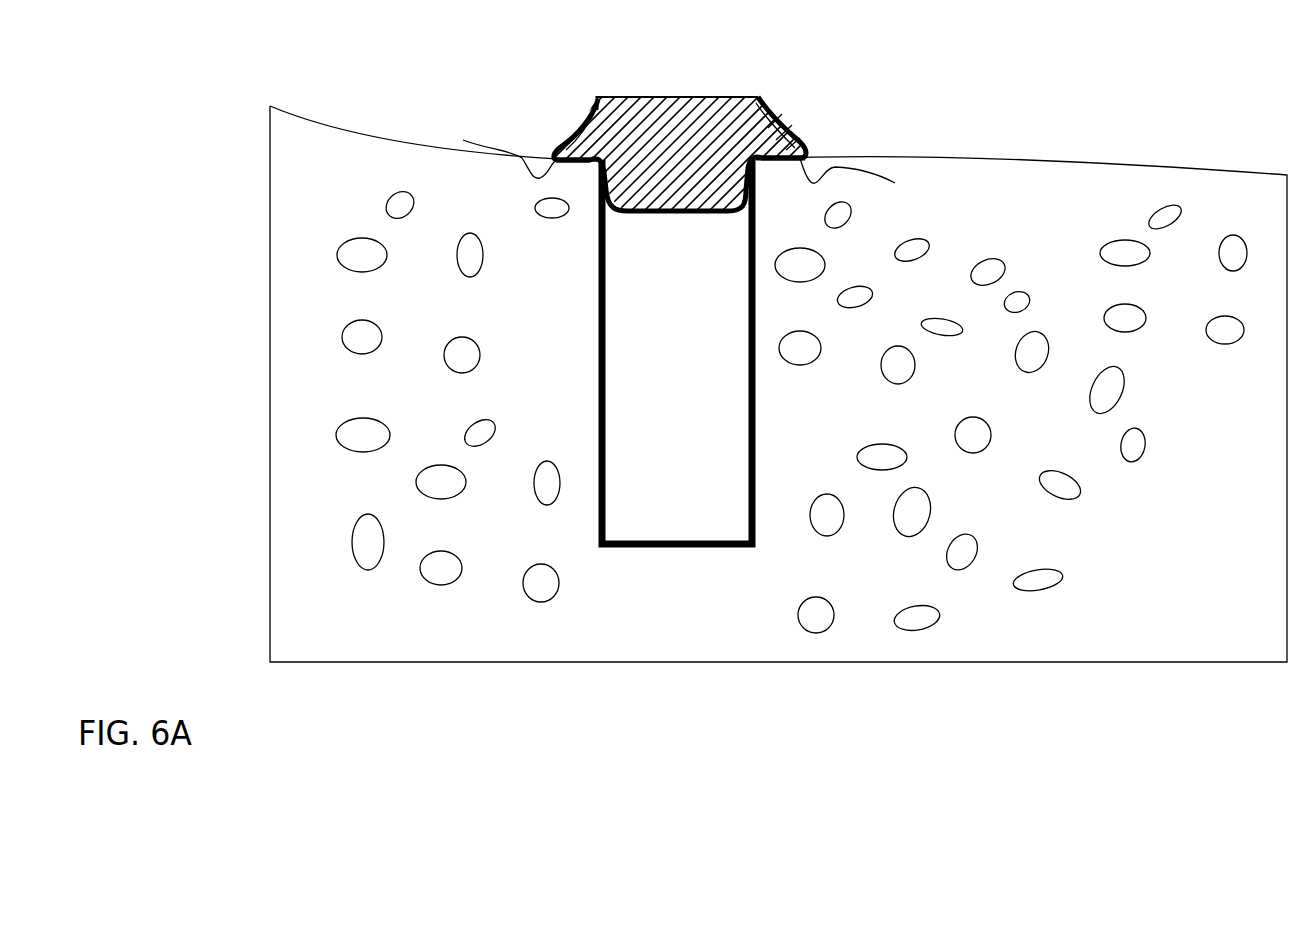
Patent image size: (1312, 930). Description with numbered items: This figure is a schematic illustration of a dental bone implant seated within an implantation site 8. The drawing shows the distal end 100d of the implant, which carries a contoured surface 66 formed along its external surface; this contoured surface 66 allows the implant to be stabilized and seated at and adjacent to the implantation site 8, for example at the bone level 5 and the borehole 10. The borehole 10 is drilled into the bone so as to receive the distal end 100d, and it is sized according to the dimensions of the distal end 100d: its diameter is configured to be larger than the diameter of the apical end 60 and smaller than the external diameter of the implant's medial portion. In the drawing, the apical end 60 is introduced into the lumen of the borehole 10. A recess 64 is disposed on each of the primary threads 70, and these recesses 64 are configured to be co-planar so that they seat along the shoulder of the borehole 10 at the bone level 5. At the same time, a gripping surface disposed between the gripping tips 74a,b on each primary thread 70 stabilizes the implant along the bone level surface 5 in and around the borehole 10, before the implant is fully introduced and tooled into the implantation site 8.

The bone level 5 is at (320, 122).
The implantation site 8 is at (510, 50).
The borehole 10 is at (640, 548).
The apical end 60 is at (687, 214).
The recess 64 is at (578, 137).
The contoured surface 66 is at (710, 226).
The primary thread 70 is at (578, 142).
The gripping tips 74a,b is at (675, 156).
The distal end 100d is at (797, 84).